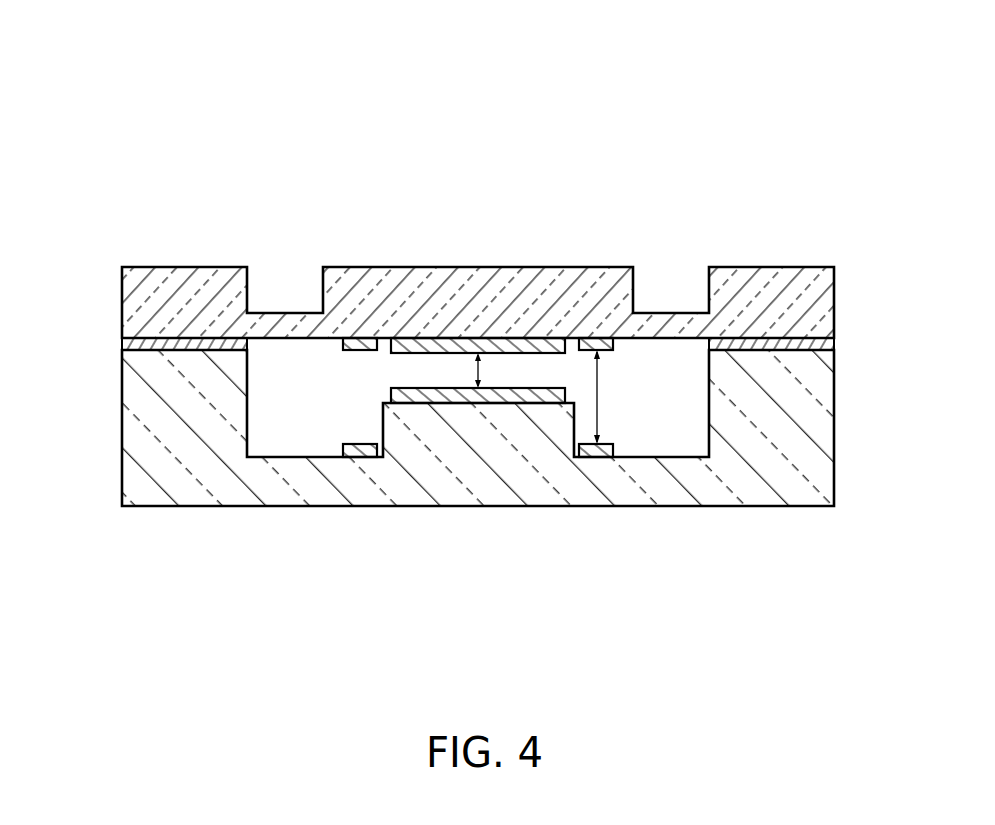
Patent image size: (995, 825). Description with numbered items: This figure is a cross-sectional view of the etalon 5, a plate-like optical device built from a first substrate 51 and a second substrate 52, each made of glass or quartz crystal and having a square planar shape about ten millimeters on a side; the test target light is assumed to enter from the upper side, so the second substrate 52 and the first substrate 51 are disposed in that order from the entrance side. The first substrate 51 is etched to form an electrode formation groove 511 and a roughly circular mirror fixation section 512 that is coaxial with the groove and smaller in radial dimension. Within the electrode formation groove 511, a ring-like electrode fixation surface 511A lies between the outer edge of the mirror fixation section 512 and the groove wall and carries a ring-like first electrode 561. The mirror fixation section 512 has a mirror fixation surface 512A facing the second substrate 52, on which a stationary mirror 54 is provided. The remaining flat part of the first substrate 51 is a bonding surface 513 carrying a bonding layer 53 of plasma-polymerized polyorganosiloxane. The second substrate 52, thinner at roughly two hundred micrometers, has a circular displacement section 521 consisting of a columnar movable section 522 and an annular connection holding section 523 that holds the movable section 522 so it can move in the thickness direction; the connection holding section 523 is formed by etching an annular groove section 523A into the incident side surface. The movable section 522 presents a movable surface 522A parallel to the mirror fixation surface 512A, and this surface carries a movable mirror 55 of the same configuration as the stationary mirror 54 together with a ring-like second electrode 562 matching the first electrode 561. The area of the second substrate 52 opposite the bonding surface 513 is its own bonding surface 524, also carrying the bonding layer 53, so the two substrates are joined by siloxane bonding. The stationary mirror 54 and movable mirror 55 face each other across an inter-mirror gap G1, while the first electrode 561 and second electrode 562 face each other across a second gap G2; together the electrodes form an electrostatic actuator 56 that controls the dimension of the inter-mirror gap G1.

The etalon 5 is at (485, 74).
The first substrate 51 is at (824, 438).
The electrode formation groove 511 is at (709, 440).
The electrode fixation surface 511A is at (640, 457).
The mirror fixation section 512 is at (574, 422).
The mirror fixation surface 512A is at (525, 398).
The bonding surface 513 is at (150, 348).
The second substrate 52 is at (824, 305).
The displacement section 521 is at (546, 180).
The movable section 522 is at (553, 272).
The movable surface 522A is at (480, 345).
The connection holding section 523 is at (277, 322).
The annular groove section 523A is at (709, 293).
The bonding surface 524 is at (817, 343).
The bonding layer 53 is at (770, 347).
The stationary mirror 54 is at (462, 405).
The movable mirror 55 is at (430, 347).
The electrostatic actuator 56 is at (382, 558).
The first electrode 561 is at (364, 460).
The second electrode 562 is at (343, 352).
The inter-mirror gap G1 is at (496, 370).
The second gap G2 is at (614, 397).